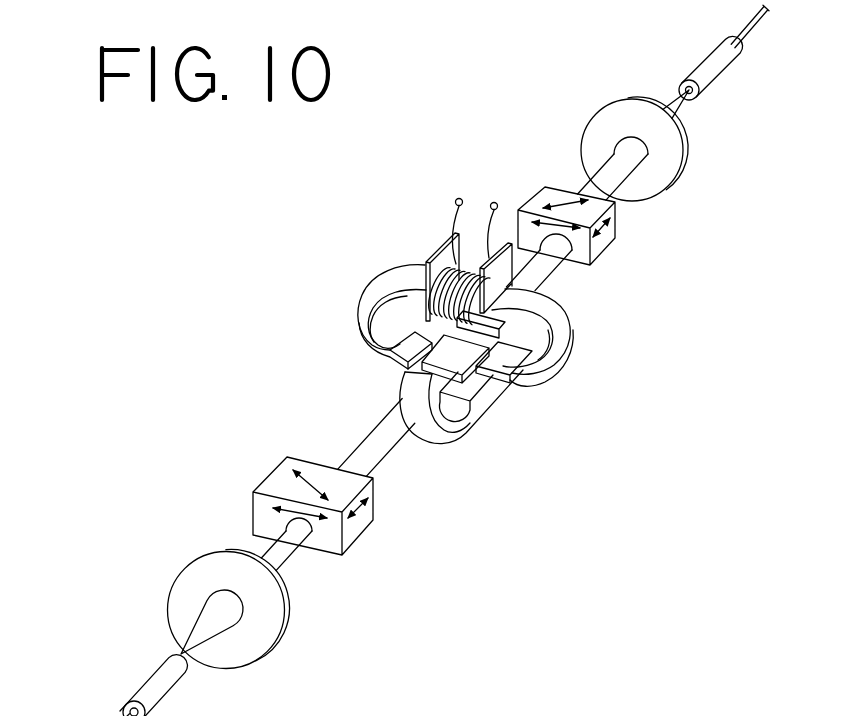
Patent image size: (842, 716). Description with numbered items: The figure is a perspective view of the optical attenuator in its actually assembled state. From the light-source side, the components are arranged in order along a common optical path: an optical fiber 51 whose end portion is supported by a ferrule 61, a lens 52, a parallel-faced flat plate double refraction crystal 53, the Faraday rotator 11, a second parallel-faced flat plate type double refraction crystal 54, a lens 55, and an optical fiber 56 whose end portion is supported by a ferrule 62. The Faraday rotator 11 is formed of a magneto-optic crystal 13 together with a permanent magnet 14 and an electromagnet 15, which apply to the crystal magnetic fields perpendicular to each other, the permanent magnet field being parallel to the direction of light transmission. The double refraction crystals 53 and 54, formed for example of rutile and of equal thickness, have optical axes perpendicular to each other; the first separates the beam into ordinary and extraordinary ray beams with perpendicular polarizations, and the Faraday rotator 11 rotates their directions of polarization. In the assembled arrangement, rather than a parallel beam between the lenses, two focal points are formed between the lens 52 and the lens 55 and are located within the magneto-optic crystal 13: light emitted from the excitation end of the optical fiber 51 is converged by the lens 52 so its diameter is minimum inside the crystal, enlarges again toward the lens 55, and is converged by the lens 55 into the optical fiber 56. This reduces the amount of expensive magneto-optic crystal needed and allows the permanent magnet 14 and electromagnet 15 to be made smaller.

The Faraday rotator 11 is at (482, 328).
The magneto-optic crystal 13 is at (412, 352).
The permanent magnet 14 is at (567, 363).
The electromagnet 15 is at (385, 282).
The optical fiber 51 is at (102, 715).
The lens 52 is at (182, 572).
The parallel-faced flat plate double refraction crystal 53 is at (273, 470).
The parallel-faced flat plate type double refraction crystal 54 is at (545, 187).
The lens 55 is at (598, 123).
The optical fiber 56 is at (742, 33).
The ferrule 61 is at (147, 673).
The ferrule 62 is at (714, 88).